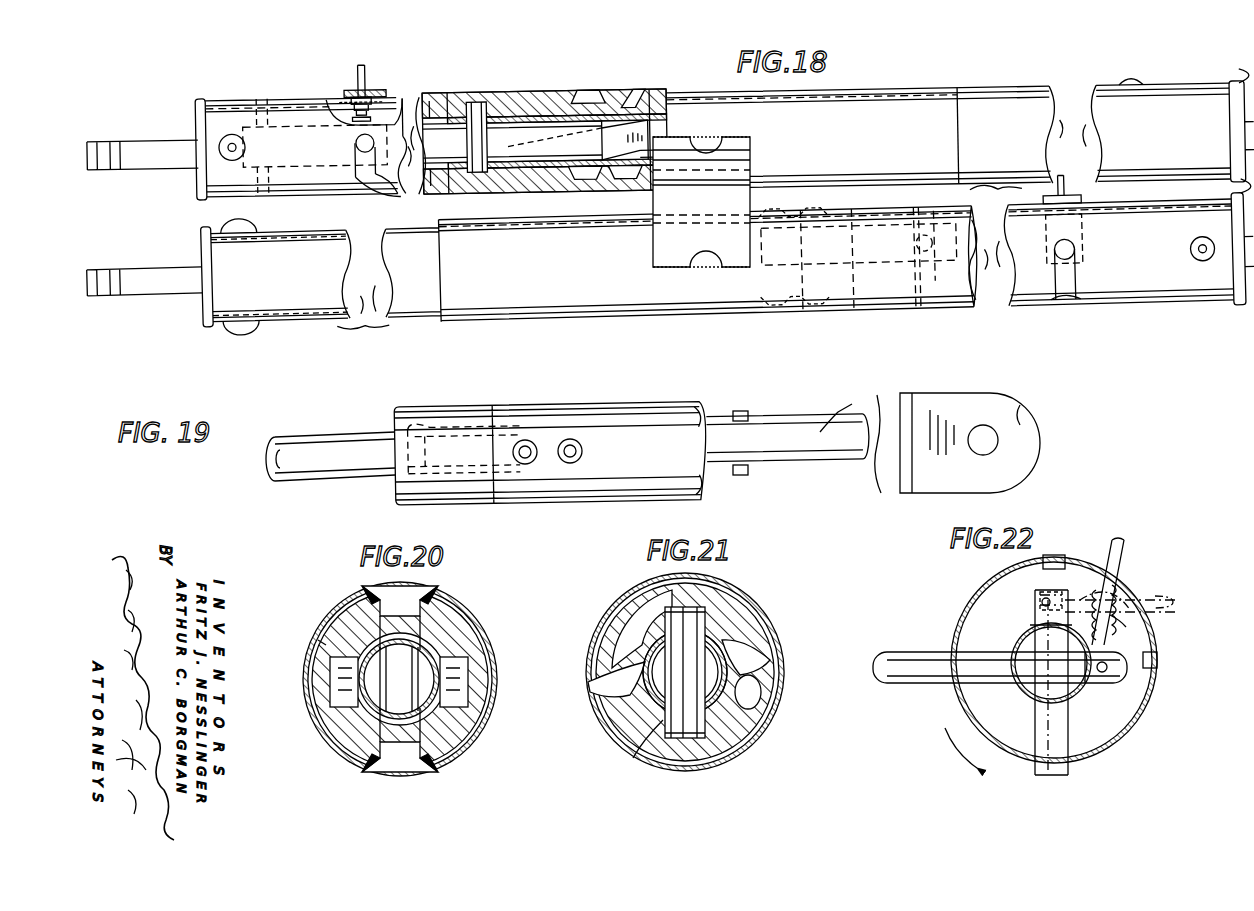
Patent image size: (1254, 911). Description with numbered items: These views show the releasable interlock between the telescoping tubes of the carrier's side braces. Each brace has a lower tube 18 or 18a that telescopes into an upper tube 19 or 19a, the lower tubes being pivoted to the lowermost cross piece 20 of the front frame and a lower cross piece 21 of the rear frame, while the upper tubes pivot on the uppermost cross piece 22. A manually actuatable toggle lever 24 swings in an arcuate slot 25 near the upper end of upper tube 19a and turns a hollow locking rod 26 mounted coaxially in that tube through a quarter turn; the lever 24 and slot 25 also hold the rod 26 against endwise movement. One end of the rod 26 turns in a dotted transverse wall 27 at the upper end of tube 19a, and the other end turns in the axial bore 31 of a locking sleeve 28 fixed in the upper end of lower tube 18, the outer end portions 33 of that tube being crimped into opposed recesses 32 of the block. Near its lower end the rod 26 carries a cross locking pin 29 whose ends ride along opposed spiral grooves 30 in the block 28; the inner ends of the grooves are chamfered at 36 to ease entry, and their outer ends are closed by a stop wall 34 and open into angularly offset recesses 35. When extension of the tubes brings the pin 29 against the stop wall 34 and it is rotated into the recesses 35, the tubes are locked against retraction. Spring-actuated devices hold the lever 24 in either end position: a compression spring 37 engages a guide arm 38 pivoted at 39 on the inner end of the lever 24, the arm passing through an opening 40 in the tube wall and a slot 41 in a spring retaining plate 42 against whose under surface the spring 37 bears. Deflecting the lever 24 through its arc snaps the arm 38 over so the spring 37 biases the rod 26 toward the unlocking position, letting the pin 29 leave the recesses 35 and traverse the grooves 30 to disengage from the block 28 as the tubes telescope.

In FIG. 18, the lower tube 18 is at (270, 326).
In FIG. 18, the lower tube 18a is at (1017, 85).
In FIG. 19, the lower tube 18a is at (604, 506).
In FIG. 20, the lower tube 18a is at (492, 670).
In FIG. 18, the upper tube 19 is at (1168, 302).
In FIG. 18, the upper tube 19a is at (283, 107).
In FIG. 20, the upper tube 19a is at (456, 605).
In FIG. 21, the upper tube 19a is at (745, 600).
In FIG. 22, the upper tube 19a is at (986, 594).
In FIG. 18, the lowermost cross piece 20 is at (650, 60).
In FIG. 18, the lower cross piece 21 is at (500, 54).
In FIG. 18, the uppermost cross piece 22 is at (380, 56).
In FIG. 18, the toggle lever 24 is at (356, 146).
In FIG. 22, the toggle lever 24 is at (908, 652).
In FIG. 18, the arcuate slot 25 is at (392, 194).
In FIG. 22, the arcuate slot 25 is at (990, 758).
In FIG. 18, the hollow locking rod 26 is at (974, 300).
In FIG. 19, the hollow locking rod 26 is at (358, 440).
In FIG. 20, the hollow locking rod 26 is at (420, 660).
In FIG. 21, the hollow locking rod 26 is at (710, 650).
In FIG. 22, the hollow locking rod 26 is at (1025, 688).
In FIG. 18, the transverse wall 27 is at (262, 106).
In FIG. 18, the locking sleeve 28 is at (520, 100).
In FIG. 19, the locking sleeve 28 is at (440, 408).
In FIG. 20, the locking sleeve 28 is at (330, 670).
In FIG. 21, the locking sleeve 28 is at (765, 656).
In FIG. 18, the locking pin 29 is at (486, 100).
In FIG. 19, the locking pin 29 is at (740, 411).
In FIG. 20, the locking pin 29 is at (385, 680).
In FIG. 21, the locking pin 29 is at (705, 745).
In FIG. 18, the spiral grooves 30 is at (612, 100).
In FIG. 20, the spiral grooves 30 is at (452, 672).
In FIG. 21, the spiral grooves 30 is at (665, 725).
In FIG. 18, the axial bore 31 is at (648, 158).
In FIG. 20, the axial bore 31 is at (470, 692).
In FIG. 21, the axial bore 31 is at (738, 680).
In FIG. 20, the recesses 32 is at (352, 604).
In FIG. 18, the outer end portions 33 is at (632, 98).
In FIG. 19, the outer end portions 33 is at (568, 440).
In FIG. 20, the outer end portions 33 is at (416, 590).
In FIG. 18, the stop wall 34 is at (440, 98).
In FIG. 21, the stop wall 34 is at (640, 636).
In FIG. 20, the offset recesses 35 is at (320, 640).
In FIG. 21, the offset recesses 35 is at (610, 670).
In FIG. 18, the chamfer 36 is at (645, 132).
In FIG. 22, the compression spring 37 is at (1122, 626).
In FIG. 18, the guide arm 38 is at (366, 67).
In FIG. 22, the guide arm 38 is at (1124, 545).
In FIG. 22, the pivot 39 is at (1102, 674).
In FIG. 18, the opening 40 is at (382, 97).
In FIG. 22, the opening 40 is at (1114, 600).
In FIG. 18, the slot 41 is at (355, 90).
In FIG. 22, the slot 41 is at (1130, 606).
In FIG. 18, the spring retaining plate 42 is at (374, 91).
In FIG. 22, the spring retaining plate 42 is at (1152, 688).